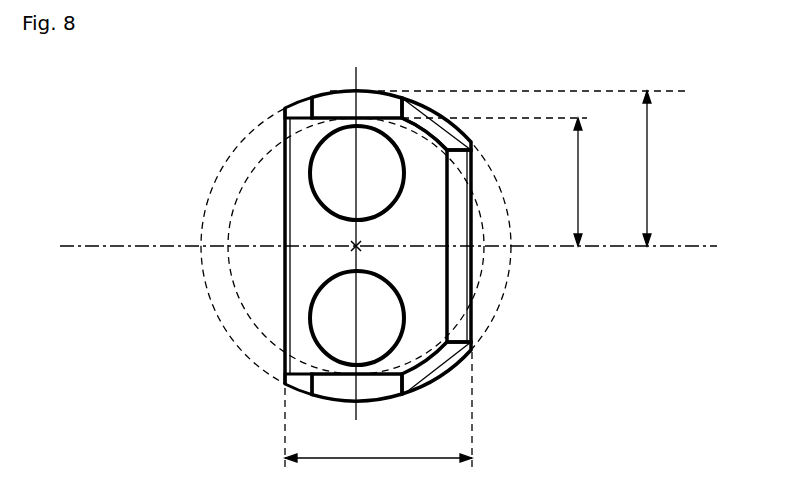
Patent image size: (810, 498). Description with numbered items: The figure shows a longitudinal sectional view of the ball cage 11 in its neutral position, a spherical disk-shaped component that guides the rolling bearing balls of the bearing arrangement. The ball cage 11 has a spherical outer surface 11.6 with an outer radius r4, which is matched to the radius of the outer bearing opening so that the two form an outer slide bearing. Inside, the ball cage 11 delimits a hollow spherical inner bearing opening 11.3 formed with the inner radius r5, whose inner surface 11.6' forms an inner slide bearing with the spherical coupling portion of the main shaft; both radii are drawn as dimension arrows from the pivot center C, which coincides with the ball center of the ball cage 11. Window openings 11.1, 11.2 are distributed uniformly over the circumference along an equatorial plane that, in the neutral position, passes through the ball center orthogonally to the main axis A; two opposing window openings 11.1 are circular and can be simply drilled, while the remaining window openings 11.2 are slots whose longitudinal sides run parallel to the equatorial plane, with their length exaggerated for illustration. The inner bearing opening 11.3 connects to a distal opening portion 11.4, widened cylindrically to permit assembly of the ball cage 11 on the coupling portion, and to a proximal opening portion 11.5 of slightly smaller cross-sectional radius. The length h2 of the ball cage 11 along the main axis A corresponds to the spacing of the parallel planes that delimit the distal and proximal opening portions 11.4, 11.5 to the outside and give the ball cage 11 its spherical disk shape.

The ball cage 11 is at (198, 80).
The window opening 11.1 is at (338, 98).
The window opening 11.2 is at (326, 175).
The inner bearing opening 11.3 is at (468, 331).
The distal opening portion 11.4 is at (284, 358).
The proximal opening portion 11.5 is at (463, 302).
The spherical outer surface 11.6 is at (453, 96).
The inner surface 11.6' is at (419, 177).
The pivot center C is at (355, 246).
The main axis A is at (700, 247).
The outer radius r4 is at (647, 136).
The inner radius r5 is at (578, 165).
The length of the ball cage h2 is at (393, 458).